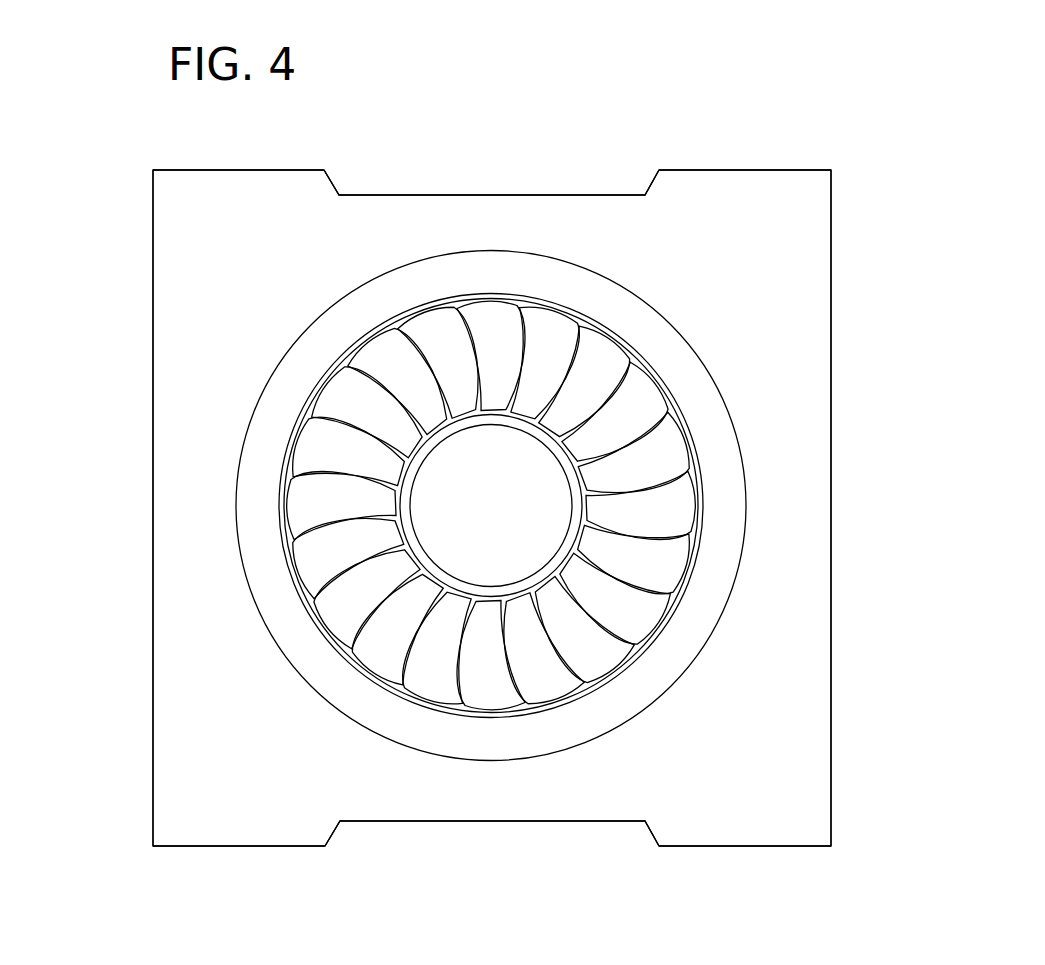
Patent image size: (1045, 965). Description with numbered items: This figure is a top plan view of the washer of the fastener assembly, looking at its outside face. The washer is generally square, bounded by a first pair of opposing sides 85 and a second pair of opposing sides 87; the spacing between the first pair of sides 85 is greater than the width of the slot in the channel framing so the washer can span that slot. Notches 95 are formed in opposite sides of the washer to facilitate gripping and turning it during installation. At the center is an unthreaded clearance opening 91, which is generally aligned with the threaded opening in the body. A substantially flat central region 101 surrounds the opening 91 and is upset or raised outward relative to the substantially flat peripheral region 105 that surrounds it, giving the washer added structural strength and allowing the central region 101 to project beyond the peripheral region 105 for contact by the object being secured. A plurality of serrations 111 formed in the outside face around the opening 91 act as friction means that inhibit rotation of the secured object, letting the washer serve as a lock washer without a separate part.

The first pair of opposing sides 85 is at (745, 170).
The second pair of opposing sides 87 is at (831, 752).
The unthreaded opening 91 is at (433, 562).
The notches 95 is at (332, 183).
The central region 101 is at (683, 587).
The peripheral region 105 is at (795, 490).
The serrations 111 is at (633, 401).